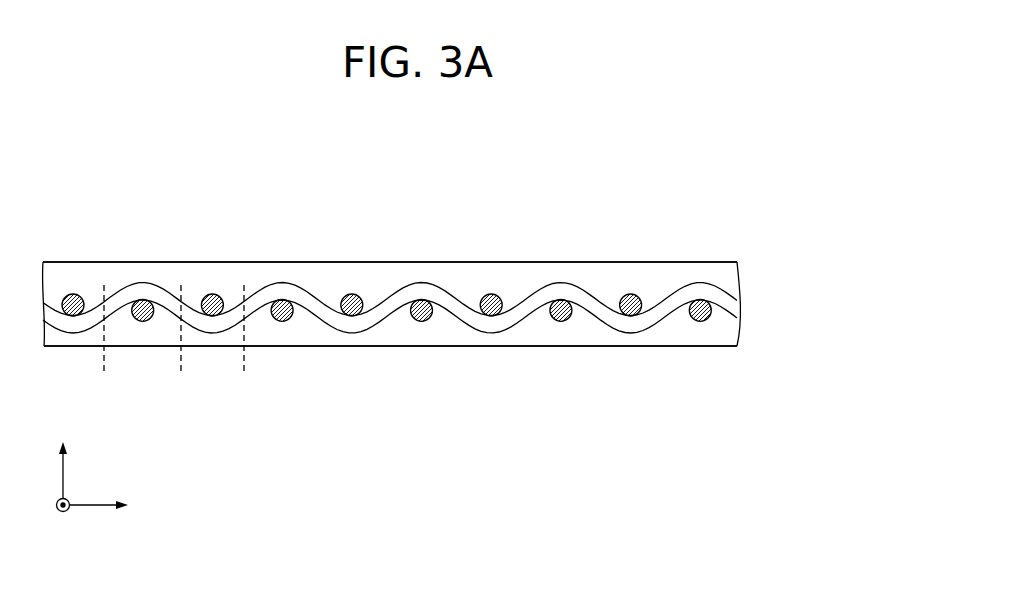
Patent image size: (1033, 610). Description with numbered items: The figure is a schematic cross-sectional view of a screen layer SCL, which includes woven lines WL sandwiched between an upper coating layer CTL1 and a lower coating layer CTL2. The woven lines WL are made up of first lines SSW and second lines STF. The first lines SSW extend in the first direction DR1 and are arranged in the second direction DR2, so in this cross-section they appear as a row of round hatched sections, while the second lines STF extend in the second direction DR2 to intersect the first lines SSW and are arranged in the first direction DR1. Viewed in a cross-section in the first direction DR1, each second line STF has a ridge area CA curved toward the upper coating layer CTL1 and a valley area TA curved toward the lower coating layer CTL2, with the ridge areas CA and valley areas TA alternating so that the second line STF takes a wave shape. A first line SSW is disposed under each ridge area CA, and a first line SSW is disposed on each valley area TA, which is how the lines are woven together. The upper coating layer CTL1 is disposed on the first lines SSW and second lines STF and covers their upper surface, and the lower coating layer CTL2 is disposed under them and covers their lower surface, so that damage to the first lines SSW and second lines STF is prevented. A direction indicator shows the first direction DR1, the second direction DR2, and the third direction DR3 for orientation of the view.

The screen layer SCL is at (736, 200).
The upper coating layer CTL1 is at (728, 277).
The lower coating layer CTL2 is at (728, 333).
The woven lines WL is at (390, 249).
The first lines SSW is at (588, 200).
The second lines STF is at (559, 288).
The ridge area CA is at (181, 372).
The valley area TA is at (244, 372).
The first direction DR1 is at (62, 519).
The second direction DR2 is at (118, 504).
The third direction DR3 is at (62, 455).